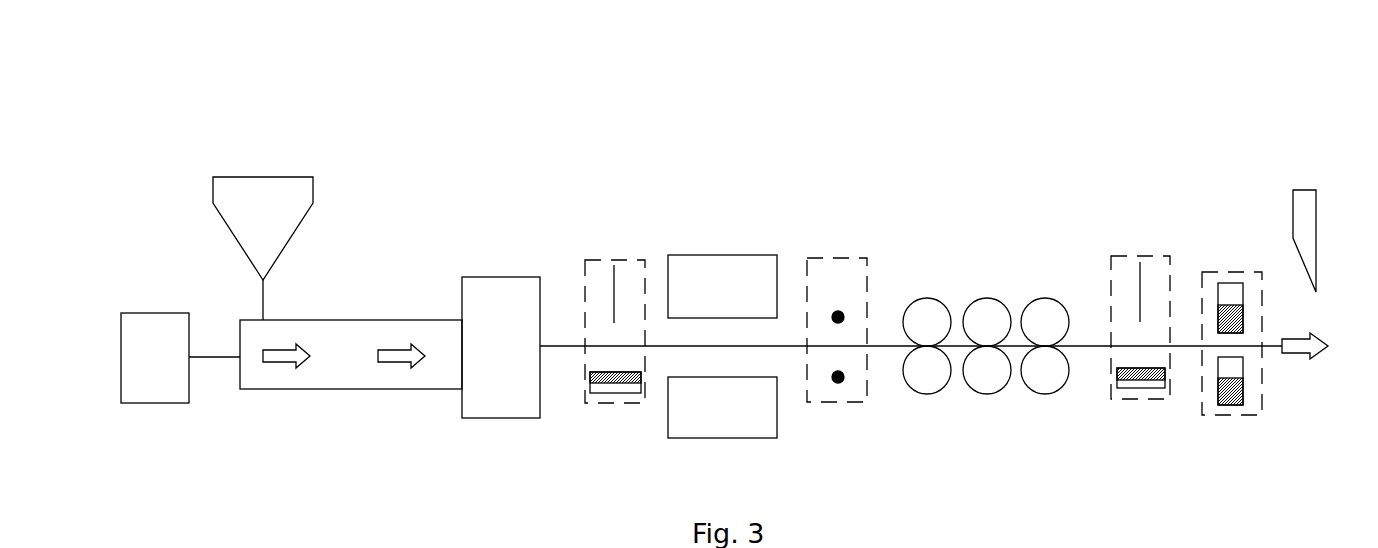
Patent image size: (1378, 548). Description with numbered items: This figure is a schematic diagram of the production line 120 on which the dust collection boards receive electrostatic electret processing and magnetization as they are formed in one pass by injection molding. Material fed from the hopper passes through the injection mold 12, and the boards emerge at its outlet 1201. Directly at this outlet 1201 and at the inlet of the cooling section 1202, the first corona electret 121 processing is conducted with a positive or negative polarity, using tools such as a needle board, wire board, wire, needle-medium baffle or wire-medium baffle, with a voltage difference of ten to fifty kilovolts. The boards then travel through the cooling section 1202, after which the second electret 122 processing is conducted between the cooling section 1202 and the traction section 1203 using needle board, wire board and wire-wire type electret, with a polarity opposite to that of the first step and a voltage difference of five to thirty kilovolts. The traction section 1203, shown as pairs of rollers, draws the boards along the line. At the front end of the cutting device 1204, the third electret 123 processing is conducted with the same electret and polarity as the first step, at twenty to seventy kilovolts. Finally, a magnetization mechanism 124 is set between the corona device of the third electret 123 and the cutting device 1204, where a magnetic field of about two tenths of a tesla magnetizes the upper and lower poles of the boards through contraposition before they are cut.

The production line 120 is at (945, 130).
The injection mold 12 is at (403, 320).
The outlet 1201 is at (500, 387).
The first corona electret 121 is at (620, 398).
The cooling section 1202 is at (713, 270).
The second electret 122 is at (845, 396).
The traction section 1203 is at (975, 297).
The third electret 123 is at (1128, 395).
The magnetization mechanism 124 is at (1245, 408).
The cutting device 1204 is at (1292, 225).